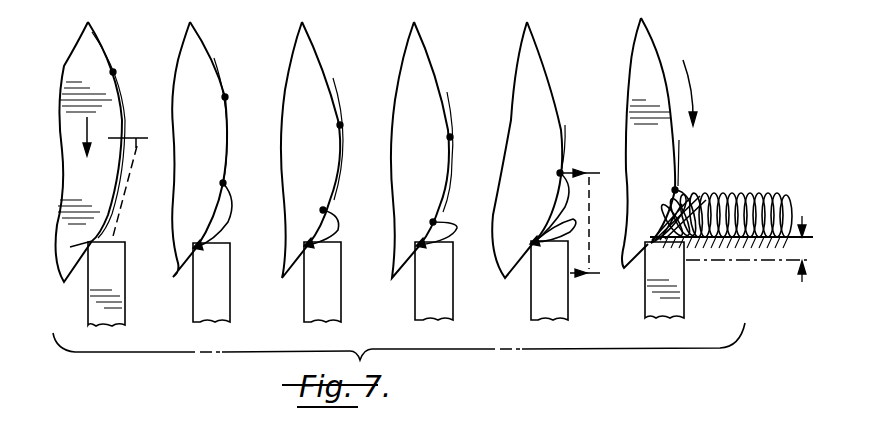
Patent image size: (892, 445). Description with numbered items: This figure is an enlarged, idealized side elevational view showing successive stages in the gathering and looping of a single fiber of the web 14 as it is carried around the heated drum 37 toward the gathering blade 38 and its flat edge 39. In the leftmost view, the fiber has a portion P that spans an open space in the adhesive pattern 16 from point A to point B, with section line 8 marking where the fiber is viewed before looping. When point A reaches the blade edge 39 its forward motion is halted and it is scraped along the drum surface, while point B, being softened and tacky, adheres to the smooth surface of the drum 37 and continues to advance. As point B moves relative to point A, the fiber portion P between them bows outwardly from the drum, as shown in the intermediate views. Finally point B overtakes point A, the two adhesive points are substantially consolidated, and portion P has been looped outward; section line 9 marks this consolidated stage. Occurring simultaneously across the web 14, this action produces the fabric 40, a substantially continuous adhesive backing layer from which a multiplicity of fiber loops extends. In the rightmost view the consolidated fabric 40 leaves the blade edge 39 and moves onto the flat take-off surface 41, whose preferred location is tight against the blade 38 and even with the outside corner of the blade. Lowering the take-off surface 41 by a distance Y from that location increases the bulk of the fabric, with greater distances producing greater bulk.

The drum 37 is at (90, 53).
The web 14 is at (119, 52).
The section line 8- 8 is at (104, 270).
The point B is at (120, 172).
The fiber portion P is at (236, 206).
The point A is at (200, 240).
The flat edge 39 is at (98, 258).
The gathering blade 38 is at (128, 302).
The section line 9- 9 is at (589, 224).
The fabric 40 is at (727, 186).
The adhesive pattern 16 is at (787, 234).
The take-off surface 41 is at (746, 241).
The distance Y is at (797, 252).